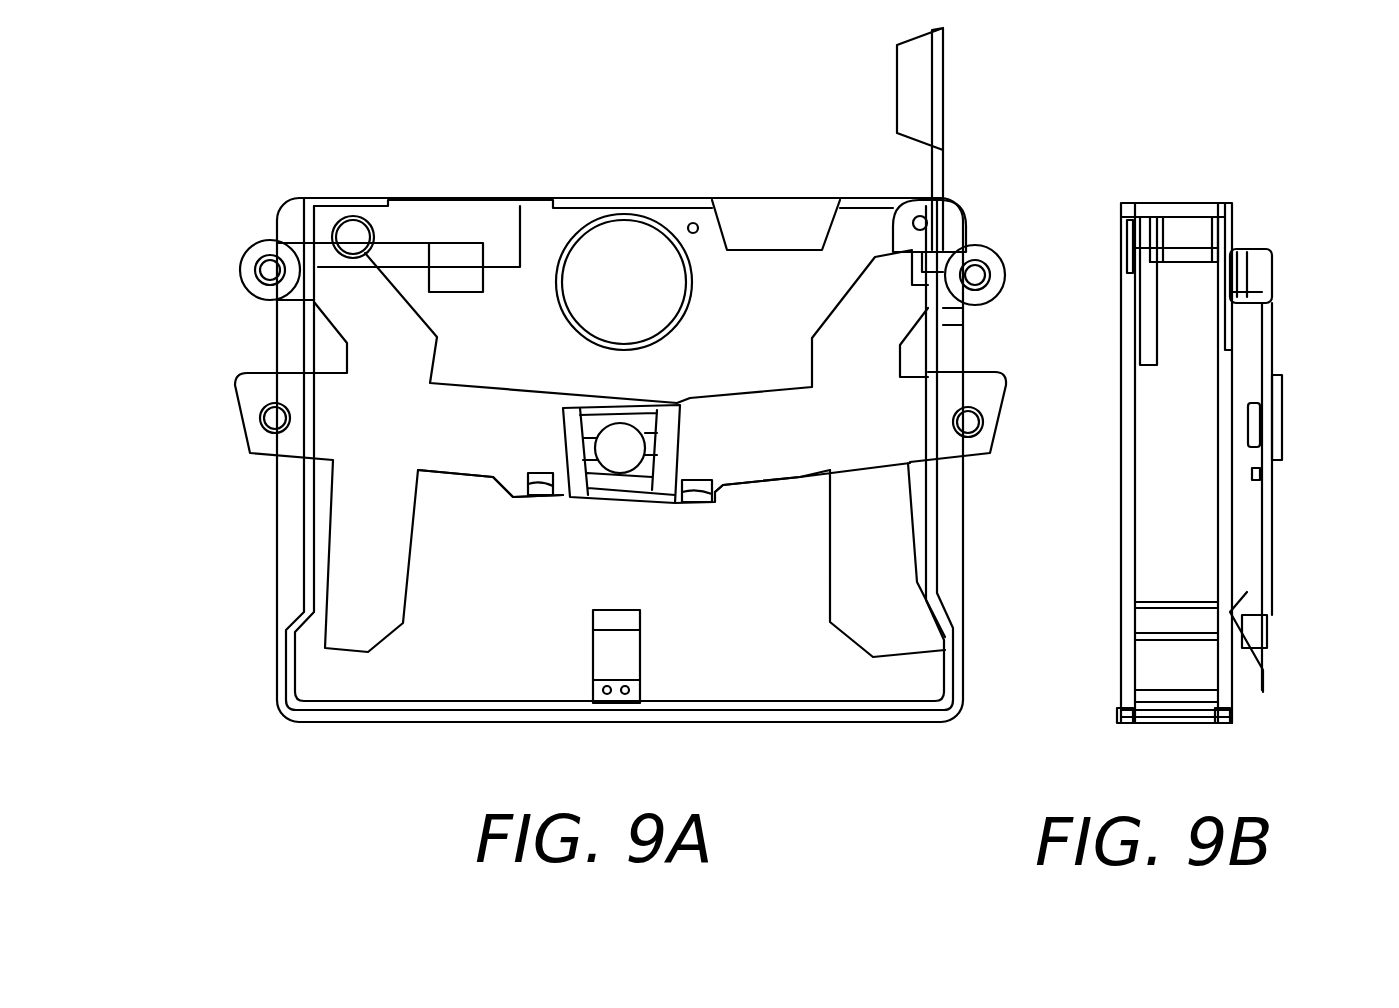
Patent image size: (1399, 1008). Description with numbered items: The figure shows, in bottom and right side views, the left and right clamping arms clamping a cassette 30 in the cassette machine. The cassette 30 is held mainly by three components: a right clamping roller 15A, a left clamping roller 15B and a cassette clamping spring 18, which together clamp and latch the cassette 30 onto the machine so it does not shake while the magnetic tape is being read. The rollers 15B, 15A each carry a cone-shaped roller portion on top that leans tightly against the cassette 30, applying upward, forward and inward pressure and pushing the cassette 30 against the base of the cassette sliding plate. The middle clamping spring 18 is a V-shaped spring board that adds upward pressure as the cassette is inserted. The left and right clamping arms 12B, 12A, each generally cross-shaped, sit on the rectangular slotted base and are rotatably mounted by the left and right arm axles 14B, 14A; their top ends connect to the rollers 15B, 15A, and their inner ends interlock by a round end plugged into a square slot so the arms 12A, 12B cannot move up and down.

In FIG. 9A, the right clamping arm 12A is at (773, 463).
In FIG. 9B, the right clamping arm 12A is at (1273, 338).
In FIG. 9A, the left clamping arm 12B is at (494, 462).
In FIG. 9A, the right clamping arm axle 14A is at (975, 438).
In FIG. 9B, the right clamping arm axle 14A is at (1260, 430).
In FIG. 9A, the left clamping arm axle 14B is at (272, 418).
In FIG. 9A, the right clamping roller 15A is at (985, 260).
In FIG. 9B, the right clamping roller 15A is at (1257, 252).
In FIG. 9A, the left clamping roller 15B is at (270, 270).
In FIG. 9A, the cassette clamping spring 18 is at (598, 648).
In FIG. 9B, the cassette clamping spring 18 is at (1263, 682).
In FIG. 9A, the cassette 30 is at (780, 693).